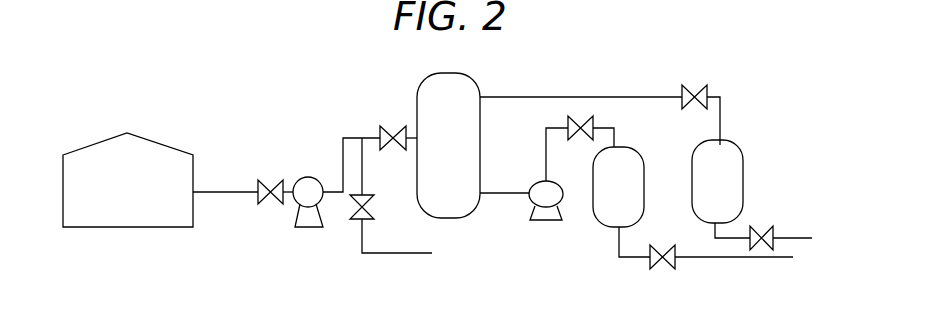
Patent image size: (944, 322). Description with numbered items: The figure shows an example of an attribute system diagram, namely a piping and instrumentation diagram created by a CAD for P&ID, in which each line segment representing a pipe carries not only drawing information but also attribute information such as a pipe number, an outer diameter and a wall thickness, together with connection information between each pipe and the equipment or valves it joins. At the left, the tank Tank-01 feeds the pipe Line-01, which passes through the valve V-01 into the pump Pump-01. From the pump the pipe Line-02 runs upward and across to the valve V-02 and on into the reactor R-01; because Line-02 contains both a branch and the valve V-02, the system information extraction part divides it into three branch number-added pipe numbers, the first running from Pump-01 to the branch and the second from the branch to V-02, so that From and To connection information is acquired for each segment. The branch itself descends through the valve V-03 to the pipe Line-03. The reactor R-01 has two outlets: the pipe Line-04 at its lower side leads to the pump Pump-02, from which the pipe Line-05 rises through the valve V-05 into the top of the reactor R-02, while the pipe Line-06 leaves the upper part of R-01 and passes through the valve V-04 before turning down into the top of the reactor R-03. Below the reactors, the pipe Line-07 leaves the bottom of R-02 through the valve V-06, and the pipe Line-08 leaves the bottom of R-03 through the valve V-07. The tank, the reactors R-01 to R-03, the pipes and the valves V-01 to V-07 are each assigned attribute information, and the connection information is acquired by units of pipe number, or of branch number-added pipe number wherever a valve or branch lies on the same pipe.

The tank Tank-01 is at (128, 192).
The pipe Line-01 is at (225, 184).
The valve V-01 is at (271, 185).
The pump Pump-01 is at (293, 211).
The pipe Line-02 is at (351, 162).
The valve V-02 is at (397, 130).
The valve V-03 is at (376, 178).
The pipe Line-03 is at (397, 236).
The reactor R-01 is at (448, 135).
The pipe Line-04 is at (493, 198).
The pump Pump-02 is at (540, 210).
The pipe Line-05 is at (547, 154).
The valve V-05 is at (591, 125).
The pipe Line-06 is at (581, 89).
The valve V-04 is at (699, 103).
The reactor R-02 is at (623, 190).
The reactor R-03 is at (727, 181).
The valve V-06 is at (661, 265).
The pipe Line-07 is at (734, 266).
The valve V-07 is at (760, 231).
The outlet line from reactor R-03 Line-08 is at (802, 228).